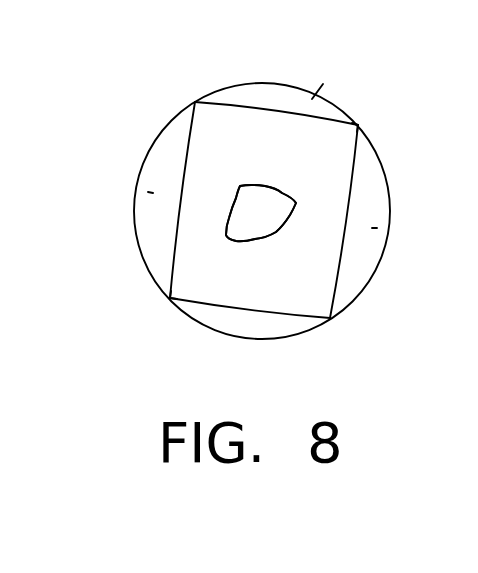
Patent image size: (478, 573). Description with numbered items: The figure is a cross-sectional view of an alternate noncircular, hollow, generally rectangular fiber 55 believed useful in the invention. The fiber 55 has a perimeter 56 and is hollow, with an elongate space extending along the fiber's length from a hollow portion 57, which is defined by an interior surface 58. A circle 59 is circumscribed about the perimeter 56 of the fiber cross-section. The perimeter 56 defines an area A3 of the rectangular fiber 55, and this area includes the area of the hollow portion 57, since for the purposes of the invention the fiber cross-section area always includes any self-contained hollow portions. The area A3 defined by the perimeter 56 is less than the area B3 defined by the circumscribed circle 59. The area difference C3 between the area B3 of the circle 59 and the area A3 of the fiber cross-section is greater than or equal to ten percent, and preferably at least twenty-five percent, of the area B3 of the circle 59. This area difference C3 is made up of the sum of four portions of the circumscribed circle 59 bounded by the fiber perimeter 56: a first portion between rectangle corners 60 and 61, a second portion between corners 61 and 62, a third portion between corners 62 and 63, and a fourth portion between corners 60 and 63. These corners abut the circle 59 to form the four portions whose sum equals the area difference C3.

The hollow generally rectangular fiber 55 is at (340, 278).
The perimeter 56 is at (188, 185).
The hollow portion 57 is at (266, 223).
The interior surface 58 is at (258, 187).
The circle 59 is at (152, 143).
The rectangle corner 60 is at (195, 102).
The rectangle corner 61 is at (359, 124).
The rectangle corner 62 is at (333, 323).
The rectangle corner 63 is at (170, 298).
The area of fiber cross-section A3 is at (212, 281).
The area of circumscribed circle B3 is at (153, 193).
The area difference C3 is at (372, 228).